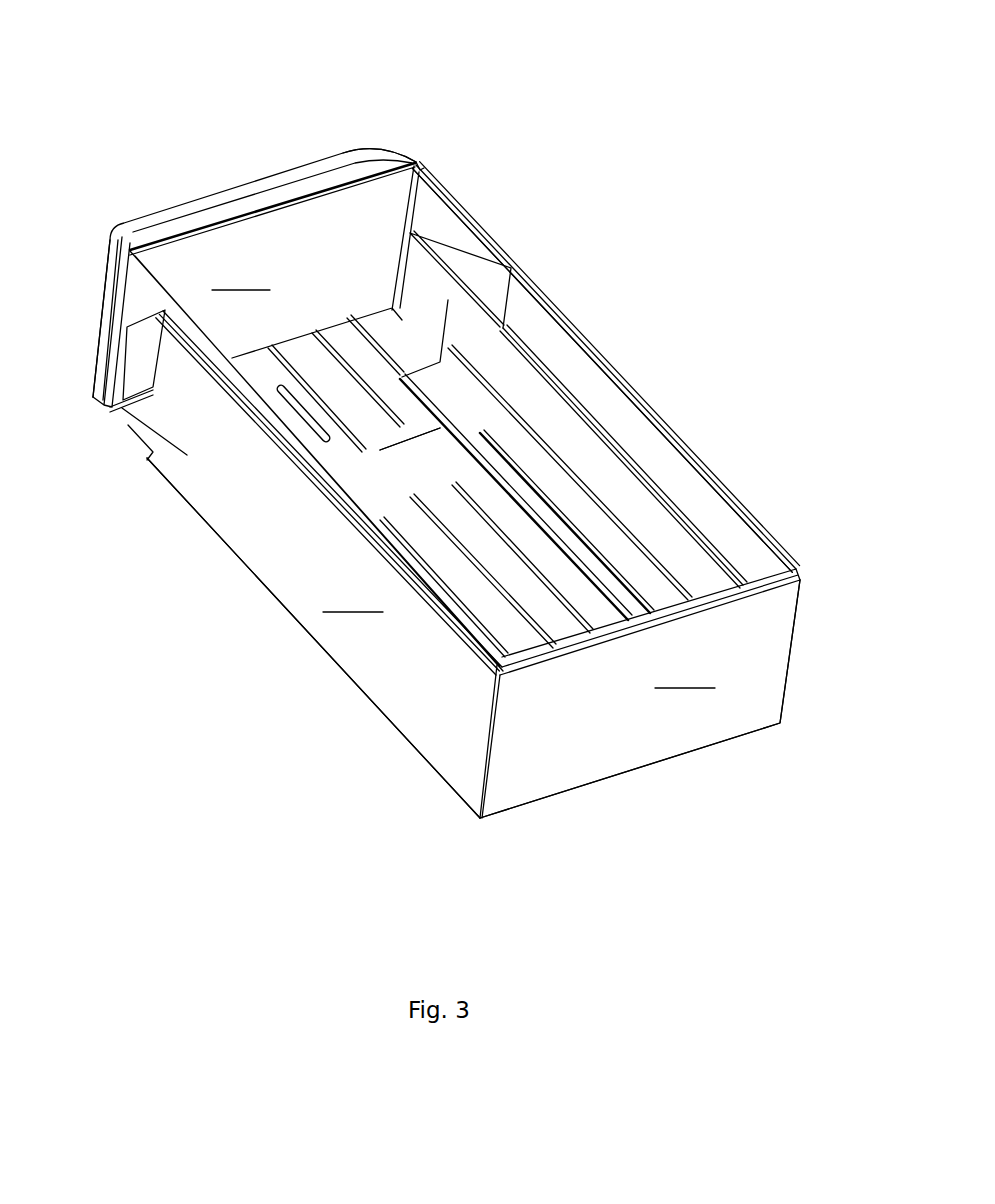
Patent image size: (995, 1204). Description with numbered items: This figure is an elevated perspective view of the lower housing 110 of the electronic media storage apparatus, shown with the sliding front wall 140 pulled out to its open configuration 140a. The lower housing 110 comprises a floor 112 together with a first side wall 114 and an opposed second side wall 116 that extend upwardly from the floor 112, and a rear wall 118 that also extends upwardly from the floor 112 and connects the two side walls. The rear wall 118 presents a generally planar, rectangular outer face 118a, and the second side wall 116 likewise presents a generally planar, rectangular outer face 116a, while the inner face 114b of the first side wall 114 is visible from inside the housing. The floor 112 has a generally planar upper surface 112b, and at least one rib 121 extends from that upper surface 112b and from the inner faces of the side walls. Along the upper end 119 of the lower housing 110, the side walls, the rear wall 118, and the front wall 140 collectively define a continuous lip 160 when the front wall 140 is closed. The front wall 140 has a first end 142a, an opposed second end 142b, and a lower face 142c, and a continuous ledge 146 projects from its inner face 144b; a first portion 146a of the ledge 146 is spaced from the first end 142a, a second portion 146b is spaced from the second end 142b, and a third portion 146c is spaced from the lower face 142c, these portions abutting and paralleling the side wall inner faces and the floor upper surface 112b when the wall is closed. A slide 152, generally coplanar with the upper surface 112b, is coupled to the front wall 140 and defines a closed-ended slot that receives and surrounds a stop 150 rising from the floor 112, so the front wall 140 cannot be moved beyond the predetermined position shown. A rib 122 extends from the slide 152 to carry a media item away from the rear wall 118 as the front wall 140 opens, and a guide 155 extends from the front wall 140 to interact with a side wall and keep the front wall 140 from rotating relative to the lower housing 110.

The lower housing 110 is at (233, 750).
The floor 112 is at (548, 515).
The upper surface 112b is at (590, 550).
The first side wall 114 is at (645, 372).
The inner face 114b is at (560, 333).
The second side wall 116 is at (285, 582).
The outer face 116a is at (353, 598).
The rear wall 118 is at (633, 742).
The outer face 118a is at (685, 674).
The upper end 119 is at (458, 657).
The rib 121 is at (563, 603).
The rib 122 is at (320, 330).
The front wall 140 is at (185, 148).
The open configuration 140a is at (473, 163).
The first end 142a is at (417, 162).
The second end 142b is at (78, 387).
The lower face 142c is at (118, 403).
The inner face 144b is at (316, 418).
The continuous ledge 146 is at (148, 413).
The first portion 146a is at (413, 257).
The second portion 146b is at (113, 360).
The third portion 146c is at (153, 452).
The stop 150 is at (336, 444).
The slide 152 is at (345, 337).
The guide 155 is at (487, 267).
The continuous lip 160 is at (778, 568).